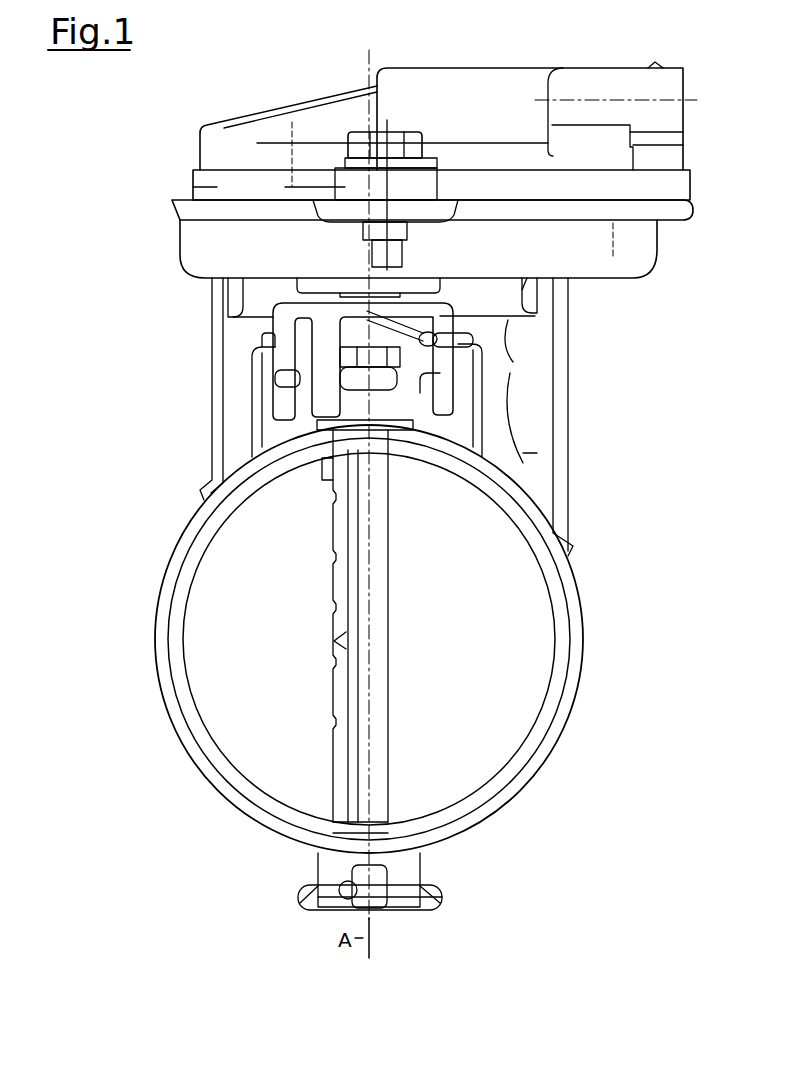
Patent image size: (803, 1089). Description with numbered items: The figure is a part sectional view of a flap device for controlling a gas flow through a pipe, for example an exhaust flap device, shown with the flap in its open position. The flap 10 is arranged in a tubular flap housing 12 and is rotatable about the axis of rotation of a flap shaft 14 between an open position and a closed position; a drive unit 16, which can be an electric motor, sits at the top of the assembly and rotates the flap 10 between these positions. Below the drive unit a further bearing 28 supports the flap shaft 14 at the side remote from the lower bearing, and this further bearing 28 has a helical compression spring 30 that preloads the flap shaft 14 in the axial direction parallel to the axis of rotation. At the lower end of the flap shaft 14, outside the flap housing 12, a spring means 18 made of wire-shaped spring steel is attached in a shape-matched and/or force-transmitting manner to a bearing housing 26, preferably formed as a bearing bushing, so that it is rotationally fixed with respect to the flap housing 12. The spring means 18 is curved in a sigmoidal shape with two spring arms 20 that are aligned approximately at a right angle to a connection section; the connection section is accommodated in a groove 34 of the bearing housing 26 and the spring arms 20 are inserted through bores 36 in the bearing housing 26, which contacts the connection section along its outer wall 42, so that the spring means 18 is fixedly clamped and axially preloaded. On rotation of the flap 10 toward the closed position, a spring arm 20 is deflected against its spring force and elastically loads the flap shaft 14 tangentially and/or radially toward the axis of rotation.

The flap 10 is at (341, 797).
The flap housing 12 is at (582, 637).
The flap shaft 14 is at (378, 762).
The drive unit 16 is at (470, 98).
The spring means 18 is at (440, 891).
The spring arm 20 is at (340, 886).
The bearing housing 26 is at (406, 898).
The further bearing 28 is at (407, 413).
The helical compression spring 30 is at (437, 325).
The groove 34 is at (396, 906).
The bore 36 is at (345, 900).
The outer wall 42 is at (333, 866).